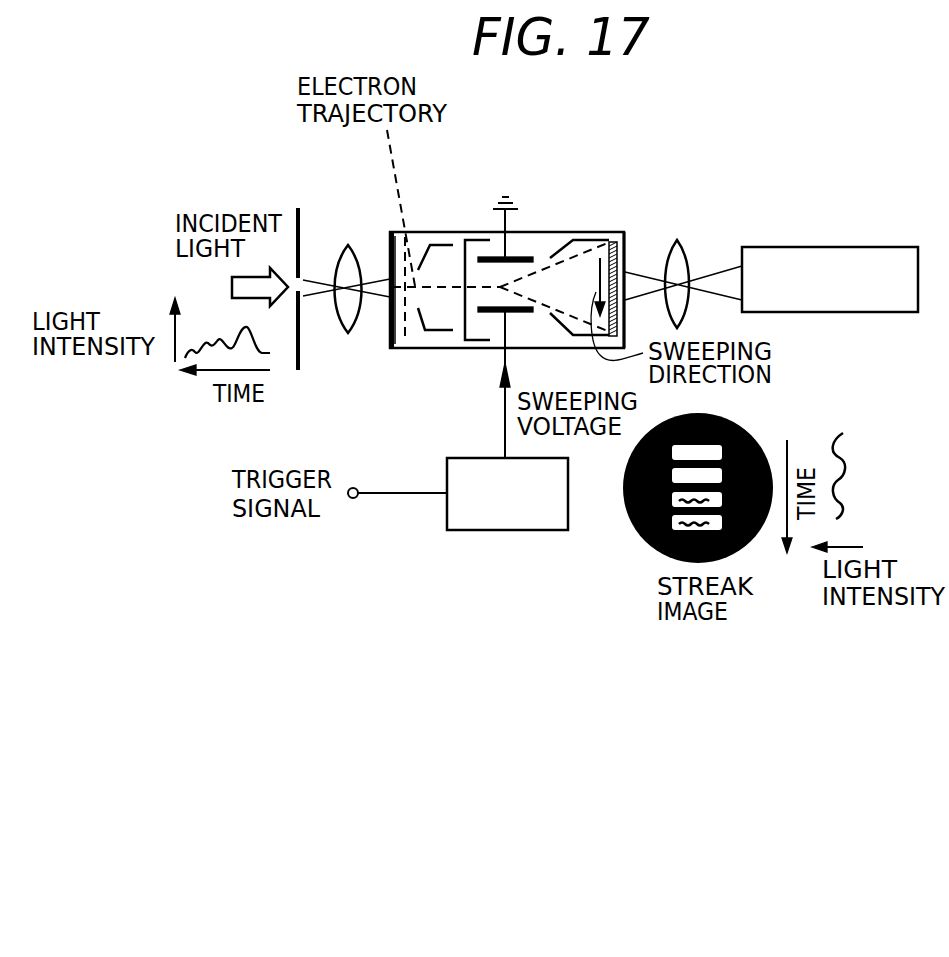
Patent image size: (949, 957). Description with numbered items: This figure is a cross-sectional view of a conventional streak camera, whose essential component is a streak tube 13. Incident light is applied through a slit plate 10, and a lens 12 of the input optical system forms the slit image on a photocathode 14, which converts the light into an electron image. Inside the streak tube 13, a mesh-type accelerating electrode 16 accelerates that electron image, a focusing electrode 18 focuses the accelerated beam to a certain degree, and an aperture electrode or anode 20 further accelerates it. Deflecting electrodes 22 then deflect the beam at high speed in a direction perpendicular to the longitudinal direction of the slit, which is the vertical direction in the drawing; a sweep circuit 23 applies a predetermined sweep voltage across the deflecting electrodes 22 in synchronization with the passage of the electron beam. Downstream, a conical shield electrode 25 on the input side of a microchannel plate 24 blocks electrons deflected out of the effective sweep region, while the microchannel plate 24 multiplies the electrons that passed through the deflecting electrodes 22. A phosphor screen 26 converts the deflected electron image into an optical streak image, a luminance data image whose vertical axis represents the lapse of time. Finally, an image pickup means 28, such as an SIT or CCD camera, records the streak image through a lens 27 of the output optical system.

The slit plate 10 is at (296, 207).
The lens 12 is at (339, 331).
The streak tube 13 is at (525, 231).
The photocathode 14 is at (392, 330).
The mesh-type accelerating electrode 16 is at (400, 253).
The focusing electrode 18 is at (426, 247).
The aperture electrode (anode) 20 is at (473, 238).
The deflecting electrodes 22 is at (529, 254).
The sweep circuit 23 is at (456, 458).
The microchannel plate (MCP) 24 is at (612, 234).
The conical shield electrode 25 is at (568, 329).
The phosphor screen 26 is at (628, 242).
The lens 27 is at (687, 266).
The image pickup means 28 is at (888, 246).